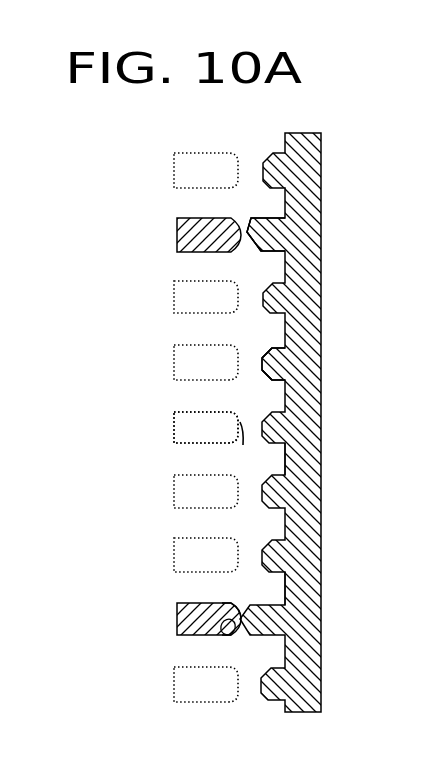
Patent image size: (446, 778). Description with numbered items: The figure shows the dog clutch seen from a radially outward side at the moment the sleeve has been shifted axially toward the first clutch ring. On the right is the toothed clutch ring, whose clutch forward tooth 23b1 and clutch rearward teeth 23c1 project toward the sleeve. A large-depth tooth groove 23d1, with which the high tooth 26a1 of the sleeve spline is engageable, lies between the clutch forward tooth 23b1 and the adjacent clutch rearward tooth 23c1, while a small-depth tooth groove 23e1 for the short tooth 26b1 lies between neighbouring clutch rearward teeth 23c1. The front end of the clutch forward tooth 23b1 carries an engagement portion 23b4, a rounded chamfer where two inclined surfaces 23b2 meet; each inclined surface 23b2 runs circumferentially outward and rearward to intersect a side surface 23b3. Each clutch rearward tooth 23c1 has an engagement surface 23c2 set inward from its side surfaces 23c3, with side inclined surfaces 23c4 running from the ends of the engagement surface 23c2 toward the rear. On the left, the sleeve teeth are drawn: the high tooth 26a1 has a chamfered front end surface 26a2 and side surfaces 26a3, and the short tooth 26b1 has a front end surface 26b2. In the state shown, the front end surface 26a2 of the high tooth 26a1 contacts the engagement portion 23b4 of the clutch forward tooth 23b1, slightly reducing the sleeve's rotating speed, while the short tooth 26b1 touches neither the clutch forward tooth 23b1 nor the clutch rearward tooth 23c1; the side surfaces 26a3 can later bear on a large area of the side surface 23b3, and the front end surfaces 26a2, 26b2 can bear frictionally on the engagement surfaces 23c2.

The clutch forward tooth 23b1 is at (268, 240).
The inclined surface 23b2 is at (243, 233).
The side surface 23b3 is at (257, 220).
The engagement portion 23b4 is at (222, 637).
The clutch rearward tooth 23c1 is at (272, 363).
The engagement surface 23c2 is at (262, 366).
The side surface 23c3 is at (268, 352).
The side inclined surface 23c4 is at (265, 352).
The large-depth tooth groove 23d1 is at (290, 579).
The small-depth tooth groove 23e1 is at (284, 447).
The high tooth 26a1 is at (177, 621).
The front end surface 26a2 is at (238, 603).
The side surface 26a3 is at (222, 606).
The short tooth 26b1 is at (173, 437).
The front end surface 26b2 is at (243, 445).